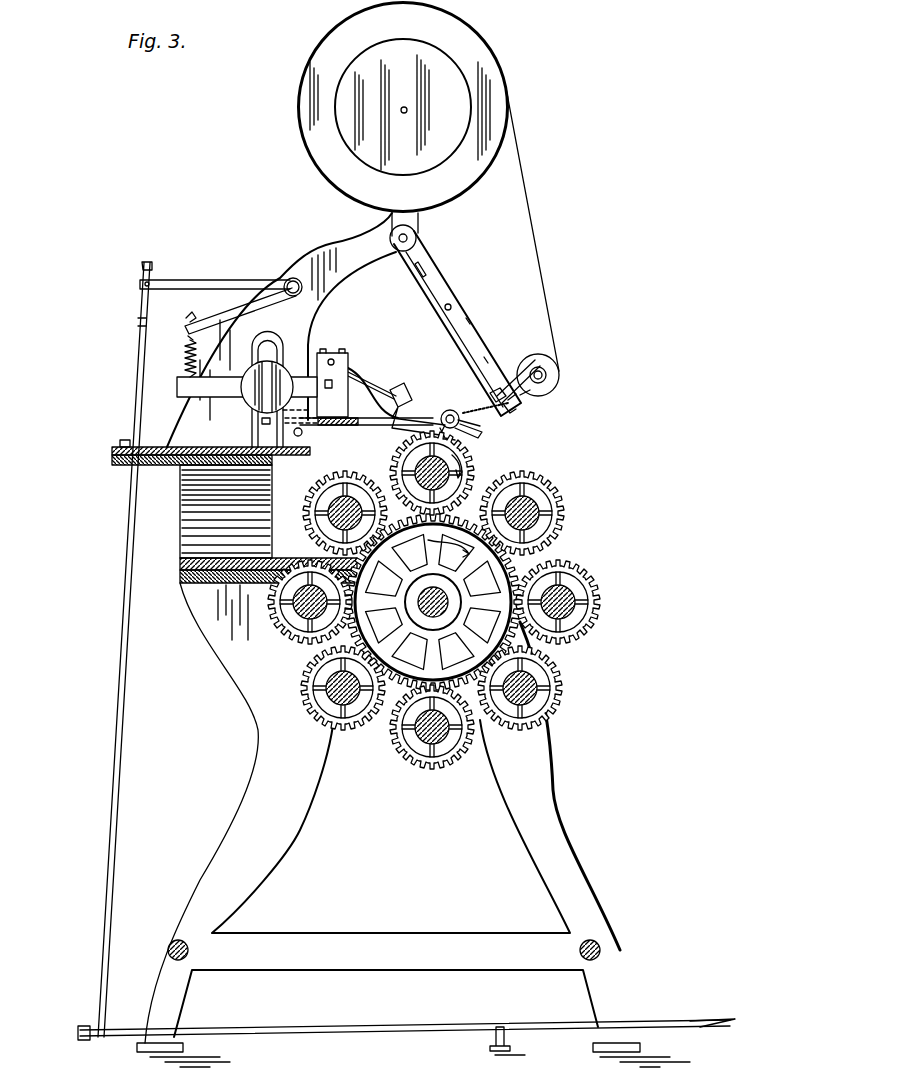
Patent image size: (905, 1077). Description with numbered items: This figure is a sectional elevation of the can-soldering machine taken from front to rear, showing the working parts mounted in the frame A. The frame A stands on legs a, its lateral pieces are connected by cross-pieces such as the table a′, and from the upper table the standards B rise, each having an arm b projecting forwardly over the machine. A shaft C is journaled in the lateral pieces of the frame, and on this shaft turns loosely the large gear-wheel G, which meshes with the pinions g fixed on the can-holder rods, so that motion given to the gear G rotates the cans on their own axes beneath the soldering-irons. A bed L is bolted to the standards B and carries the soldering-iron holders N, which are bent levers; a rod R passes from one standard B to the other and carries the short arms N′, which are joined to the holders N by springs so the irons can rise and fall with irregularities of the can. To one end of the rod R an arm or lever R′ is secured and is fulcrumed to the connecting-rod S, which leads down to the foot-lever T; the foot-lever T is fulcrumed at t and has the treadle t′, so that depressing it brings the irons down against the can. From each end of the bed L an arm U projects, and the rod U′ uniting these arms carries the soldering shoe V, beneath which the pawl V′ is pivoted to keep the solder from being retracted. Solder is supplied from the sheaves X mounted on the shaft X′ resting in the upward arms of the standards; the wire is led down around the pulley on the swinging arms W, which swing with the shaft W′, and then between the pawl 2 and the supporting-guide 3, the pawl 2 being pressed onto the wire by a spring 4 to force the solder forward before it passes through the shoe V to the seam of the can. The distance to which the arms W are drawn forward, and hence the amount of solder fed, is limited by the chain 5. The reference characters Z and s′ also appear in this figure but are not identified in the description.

The sheave X is at (403, 107).
The shaft X′ is at (404, 108).
The belt Z is at (545, 250).
The shaft W′ is at (410, 238).
The arm W is at (448, 330).
The pawl 2 is at (520, 397).
The supporting-guide 3 is at (512, 410).
The spring 4 is at (518, 378).
The chain 5 is at (485, 398).
The arm U is at (447, 408).
The rod U′ is at (455, 408).
The soldering shoe V is at (469, 409).
The pawl V′ is at (472, 430).
The bed L is at (335, 426).
The standard B is at (286, 377).
The soldering-iron holder N is at (247, 387).
The arm N′ is at (240, 314).
The rod R is at (285, 280).
The arm R′ is at (216, 285).
The guide s′ is at (138, 322).
The connecting-rod S is at (133, 524).
The arm b is at (345, 260).
The frame A is at (226, 552).
The leg a is at (413, 640).
The table a′ is at (180, 566).
The gear-wheel G is at (433, 602).
The shaft C is at (418, 603).
The pinion g is at (318, 495).
The foot-lever T is at (404, 1026).
The fulcrum t is at (508, 1047).
The treadle t′ is at (705, 1024).